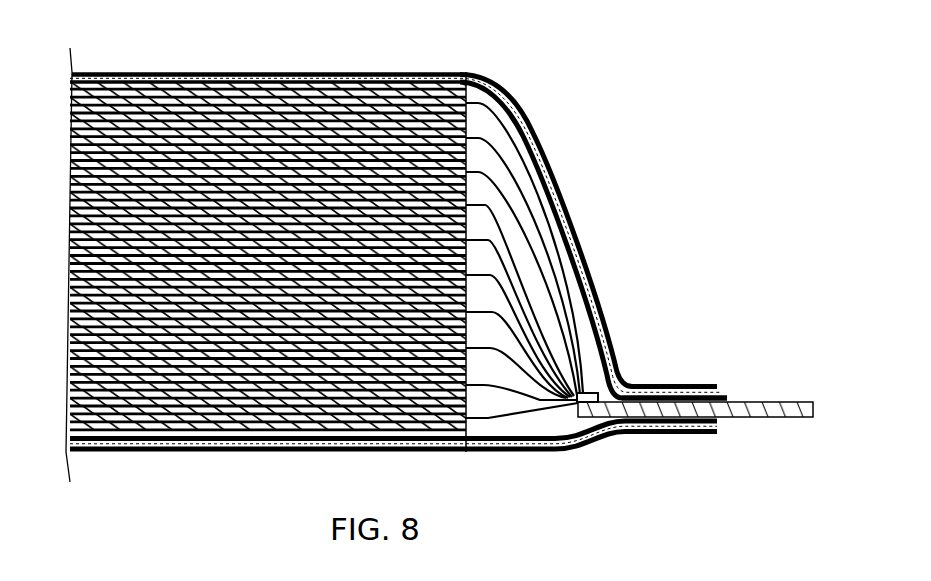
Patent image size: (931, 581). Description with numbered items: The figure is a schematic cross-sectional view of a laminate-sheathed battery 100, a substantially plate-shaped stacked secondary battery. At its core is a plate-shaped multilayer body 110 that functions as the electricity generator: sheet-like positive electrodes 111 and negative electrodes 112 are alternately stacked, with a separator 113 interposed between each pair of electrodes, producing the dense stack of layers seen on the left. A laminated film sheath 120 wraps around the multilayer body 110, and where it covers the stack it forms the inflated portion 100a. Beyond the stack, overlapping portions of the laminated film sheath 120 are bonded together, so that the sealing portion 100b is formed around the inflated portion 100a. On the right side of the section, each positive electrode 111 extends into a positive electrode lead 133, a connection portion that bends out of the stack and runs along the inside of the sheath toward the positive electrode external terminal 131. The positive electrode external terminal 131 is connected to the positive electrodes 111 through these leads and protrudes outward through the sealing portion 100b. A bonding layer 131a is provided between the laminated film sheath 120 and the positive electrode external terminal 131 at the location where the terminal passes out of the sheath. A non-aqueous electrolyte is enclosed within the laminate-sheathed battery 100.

The laminate-sheathed battery 100 is at (646, 99).
The inflated portion 100a is at (134, 71).
The sealing portion 100b is at (667, 383).
The multilayer body 110 is at (490, 96).
The positive electrode 111 is at (357, 74).
The negative electrode 112 is at (289, 79).
The separator 113 is at (400, 82).
The laminated film sheath 120 is at (547, 147).
The positive electrode lead 133 is at (509, 143).
The positive electrode external terminal 131 is at (754, 425).
The bonding layer 131a is at (670, 436).